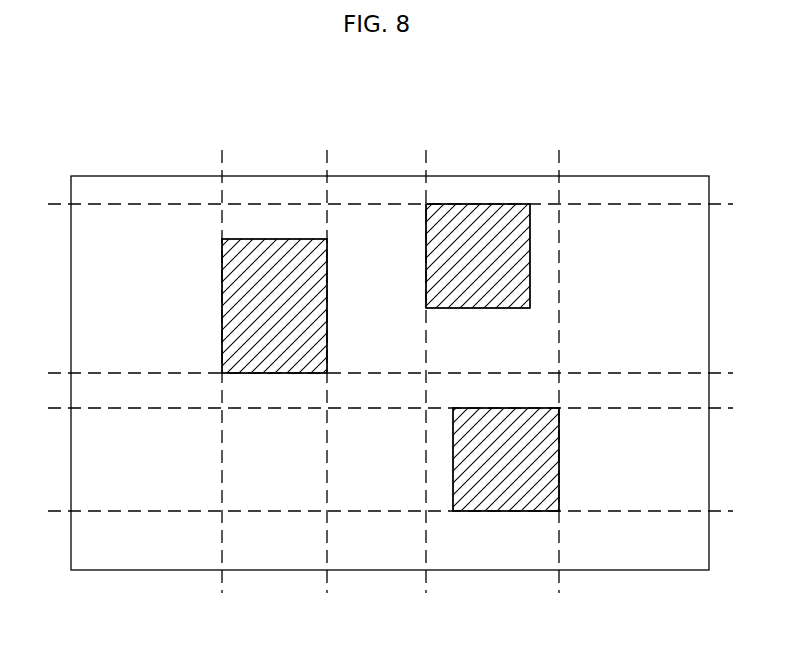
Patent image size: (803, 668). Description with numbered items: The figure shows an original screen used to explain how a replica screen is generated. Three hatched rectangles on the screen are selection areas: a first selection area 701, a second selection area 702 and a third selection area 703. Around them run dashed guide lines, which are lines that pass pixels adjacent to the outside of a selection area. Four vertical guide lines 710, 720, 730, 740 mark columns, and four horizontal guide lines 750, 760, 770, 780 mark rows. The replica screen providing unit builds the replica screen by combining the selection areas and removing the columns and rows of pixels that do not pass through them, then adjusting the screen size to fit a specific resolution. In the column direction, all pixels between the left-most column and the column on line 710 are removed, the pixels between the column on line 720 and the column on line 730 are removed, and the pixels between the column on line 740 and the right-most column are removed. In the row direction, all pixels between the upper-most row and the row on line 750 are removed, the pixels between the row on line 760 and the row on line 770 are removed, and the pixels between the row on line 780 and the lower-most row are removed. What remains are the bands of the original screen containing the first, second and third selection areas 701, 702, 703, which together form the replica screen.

The first selection area 701 is at (274, 306).
The second selection area 702 is at (478, 256).
The third selection area 703 is at (506, 459).
The guide line 710 is at (222, 160).
The guide line 720 is at (327, 160).
The guide line 730 is at (426, 160).
The guide line 740 is at (559, 160).
The guide line 750 is at (48, 204).
The guide line 760 is at (48, 373).
The guide line 770 is at (48, 408).
The guide line 780 is at (48, 511).